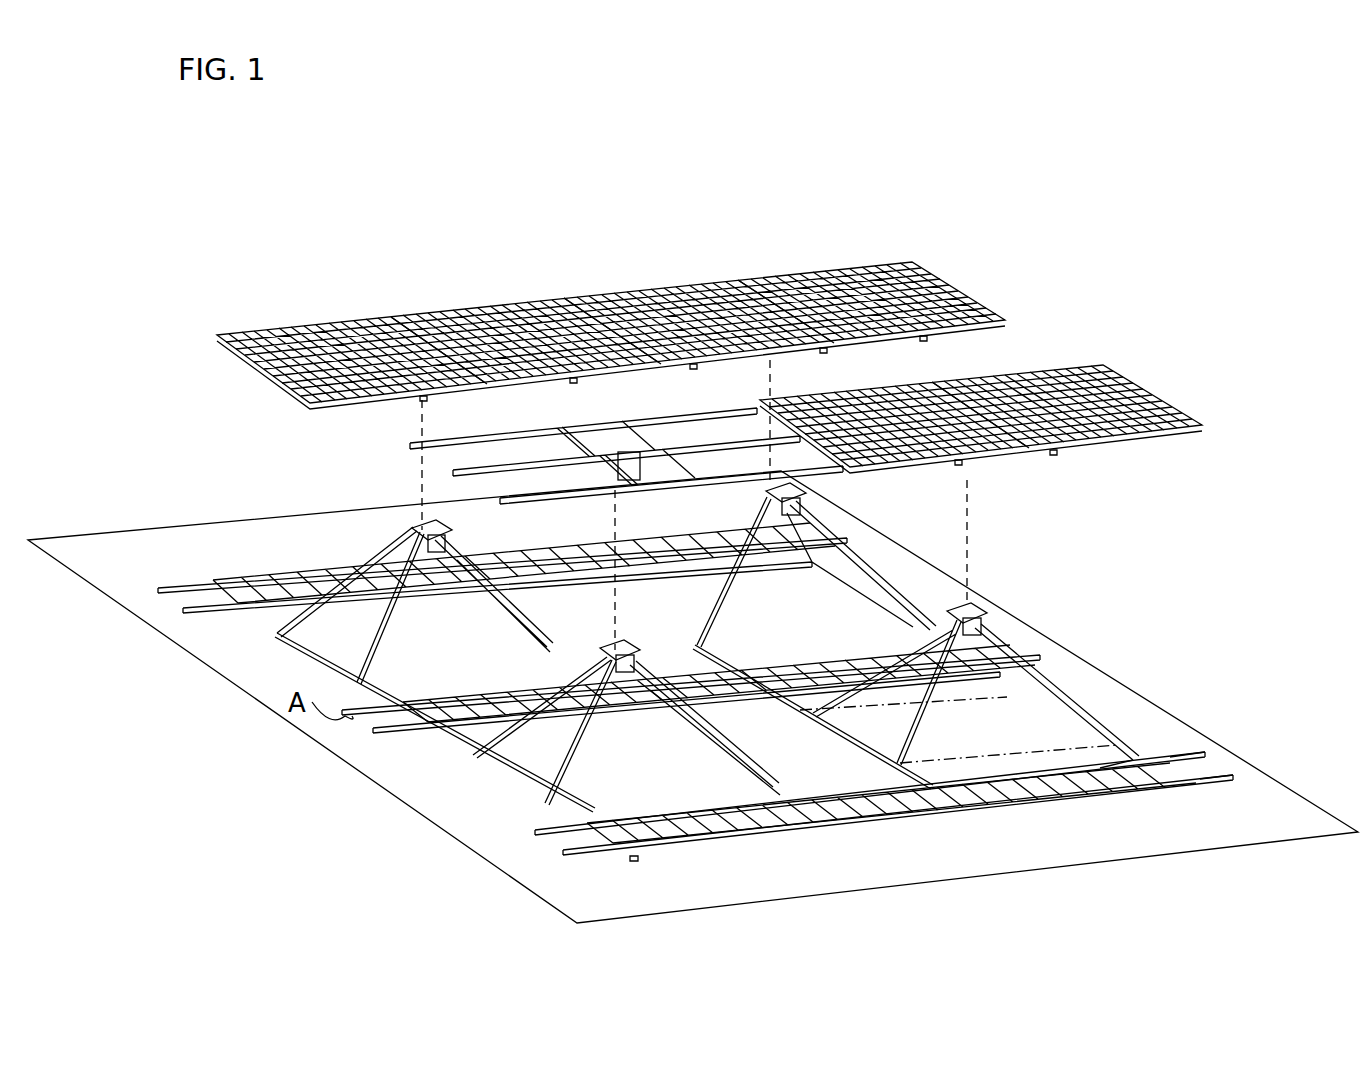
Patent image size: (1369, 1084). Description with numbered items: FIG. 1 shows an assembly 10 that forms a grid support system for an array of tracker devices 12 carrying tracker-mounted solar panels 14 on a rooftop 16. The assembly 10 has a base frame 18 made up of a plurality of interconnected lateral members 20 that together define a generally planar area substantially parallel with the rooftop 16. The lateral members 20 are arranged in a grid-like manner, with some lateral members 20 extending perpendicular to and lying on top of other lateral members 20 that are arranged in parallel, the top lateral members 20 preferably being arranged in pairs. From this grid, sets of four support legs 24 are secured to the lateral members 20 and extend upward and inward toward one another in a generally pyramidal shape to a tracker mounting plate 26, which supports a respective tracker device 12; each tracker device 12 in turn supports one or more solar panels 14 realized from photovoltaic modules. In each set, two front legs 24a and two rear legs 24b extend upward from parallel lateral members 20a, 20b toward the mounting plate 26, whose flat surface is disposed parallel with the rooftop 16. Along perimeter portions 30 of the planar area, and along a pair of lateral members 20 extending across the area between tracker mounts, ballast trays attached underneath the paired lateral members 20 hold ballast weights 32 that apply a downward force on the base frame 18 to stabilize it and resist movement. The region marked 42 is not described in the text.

The assembly 10 is at (1100, 211).
The tracker device 12 is at (690, 283).
The solar panel 14 is at (650, 283).
The rooftop 16 is at (465, 820).
The base frame 18 is at (1115, 752).
The lateral member 20 is at (375, 735).
The lateral member 20a is at (767, 787).
The lateral member 20b is at (520, 793).
The support leg 24 is at (895, 658).
The front leg 24a is at (707, 727).
The rear leg 24b is at (533, 692).
The tracker mounting plate 26 is at (795, 486).
The perimeter portion 30 is at (1177, 800).
The ballast weight 32 is at (637, 855).
The module footprint 42 is at (1043, 745).